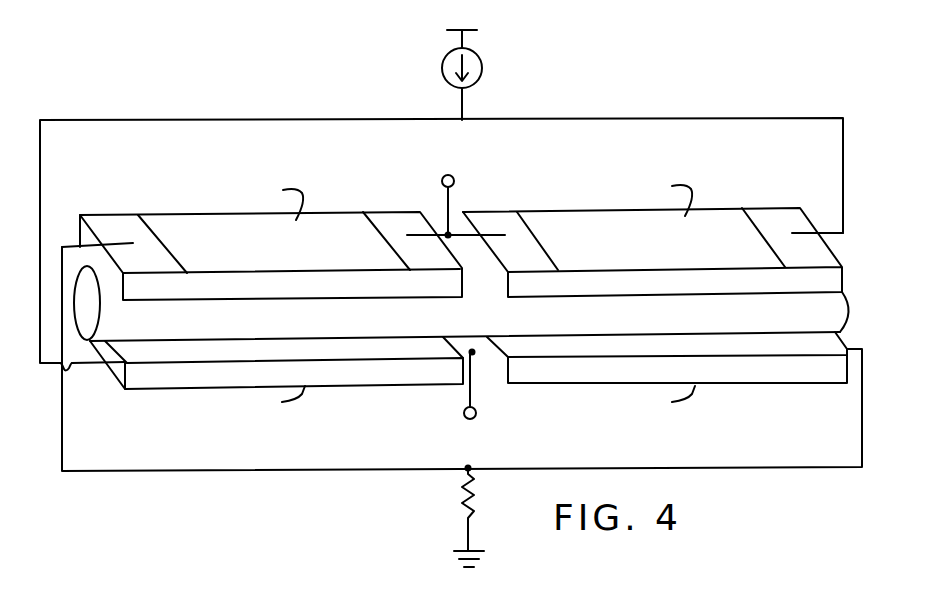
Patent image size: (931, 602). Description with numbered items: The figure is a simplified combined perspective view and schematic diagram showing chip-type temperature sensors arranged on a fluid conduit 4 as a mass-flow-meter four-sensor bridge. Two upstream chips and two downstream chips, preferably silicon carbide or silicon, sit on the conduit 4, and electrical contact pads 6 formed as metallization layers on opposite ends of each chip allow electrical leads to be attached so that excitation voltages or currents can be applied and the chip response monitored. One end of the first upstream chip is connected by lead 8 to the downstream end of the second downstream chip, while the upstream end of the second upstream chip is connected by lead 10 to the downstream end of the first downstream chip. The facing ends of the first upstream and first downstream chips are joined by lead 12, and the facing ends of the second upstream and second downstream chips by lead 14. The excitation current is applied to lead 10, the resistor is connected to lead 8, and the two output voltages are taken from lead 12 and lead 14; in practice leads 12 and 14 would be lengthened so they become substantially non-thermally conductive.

The fluid conduit 4 is at (170, 337).
The electrical contact pads 6 is at (106, 219).
The lead 8 is at (310, 470).
The lead 10 is at (274, 119).
The lead 12 is at (433, 217).
The lead 14 is at (481, 355).